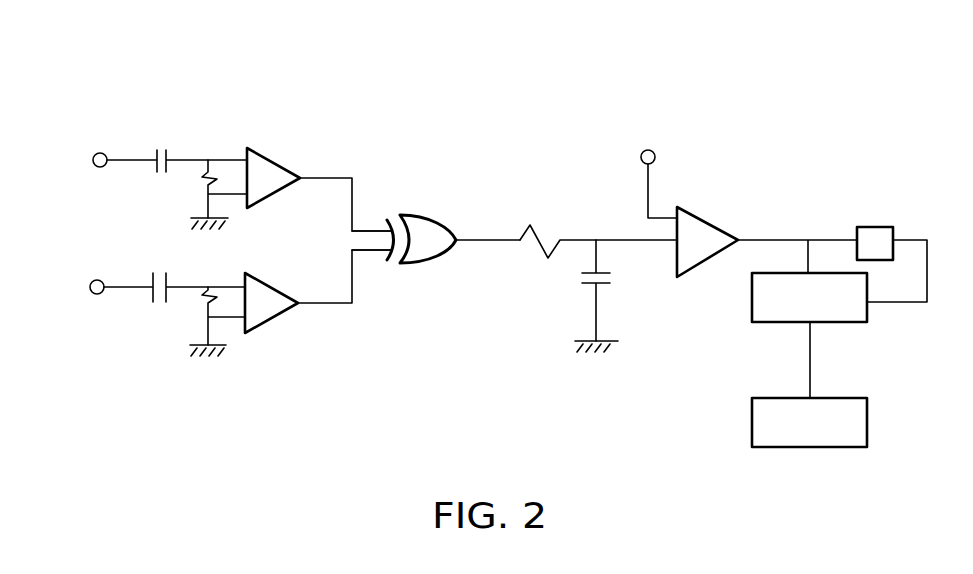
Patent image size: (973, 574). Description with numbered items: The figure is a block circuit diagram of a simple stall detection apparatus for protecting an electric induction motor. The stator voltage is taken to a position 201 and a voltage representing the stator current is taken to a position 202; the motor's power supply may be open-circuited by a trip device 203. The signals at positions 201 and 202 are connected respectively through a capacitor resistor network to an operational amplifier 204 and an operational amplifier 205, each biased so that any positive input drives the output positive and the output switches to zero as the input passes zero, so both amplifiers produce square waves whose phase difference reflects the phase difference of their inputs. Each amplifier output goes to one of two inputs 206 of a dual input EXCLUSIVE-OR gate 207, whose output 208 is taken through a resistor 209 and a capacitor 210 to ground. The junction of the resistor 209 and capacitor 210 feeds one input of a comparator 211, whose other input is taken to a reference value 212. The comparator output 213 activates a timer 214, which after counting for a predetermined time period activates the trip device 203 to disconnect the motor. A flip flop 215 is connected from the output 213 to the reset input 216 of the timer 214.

The position 201 is at (105, 150).
The position 202 is at (107, 272).
The trip device 203 is at (867, 437).
The operational amplifier 204 is at (273, 160).
The operational amplifier 205 is at (267, 307).
The input 206 is at (372, 228).
The EXCLUSIVE-OR gate 207 is at (445, 232).
The output 208 is at (477, 241).
The resistor 209 is at (548, 258).
The capacitor 210 is at (600, 285).
The comparator 211 is at (697, 220).
The reference value 212 is at (655, 148).
The comparator output 213 is at (788, 242).
The timer 214 is at (750, 317).
The flip flop 215 is at (882, 227).
The reset input 216 is at (868, 302).